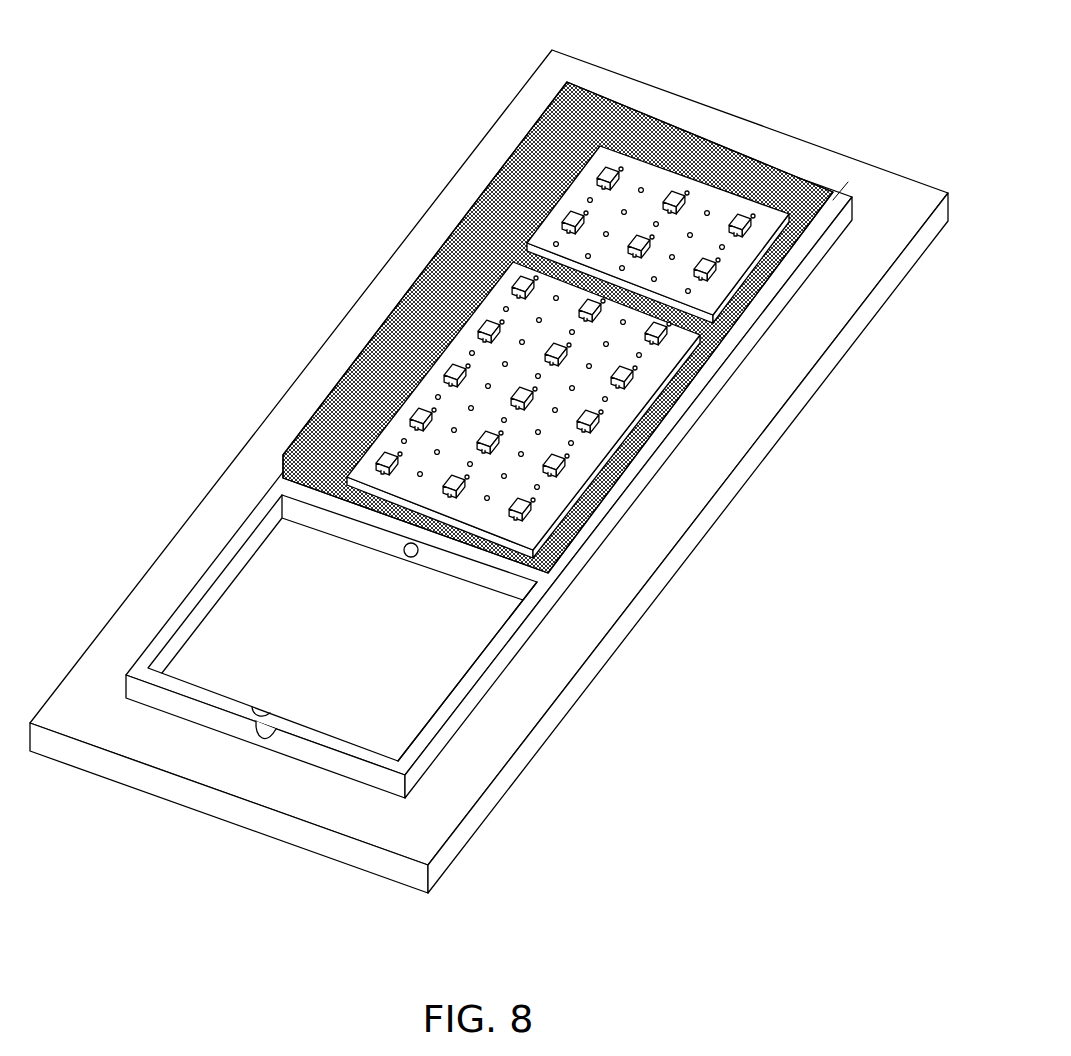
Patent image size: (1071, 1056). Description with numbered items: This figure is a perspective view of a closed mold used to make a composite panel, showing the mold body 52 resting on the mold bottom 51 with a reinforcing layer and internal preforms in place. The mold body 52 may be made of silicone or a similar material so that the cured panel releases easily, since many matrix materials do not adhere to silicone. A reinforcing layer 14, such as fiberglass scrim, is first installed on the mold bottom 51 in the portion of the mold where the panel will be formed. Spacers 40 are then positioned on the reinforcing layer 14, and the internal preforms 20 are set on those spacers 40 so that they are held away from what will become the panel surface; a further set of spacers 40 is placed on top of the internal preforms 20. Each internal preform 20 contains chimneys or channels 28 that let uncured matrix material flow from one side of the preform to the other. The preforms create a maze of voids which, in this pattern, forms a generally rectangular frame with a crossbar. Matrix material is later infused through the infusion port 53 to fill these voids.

The reinforcing layer 14 is at (414, 288).
The internal preform 20 is at (668, 183).
The channel 28 is at (720, 203).
The spacer 40 is at (610, 170).
The mold bottom 51 is at (670, 532).
The mold body 52 is at (710, 393).
The infusion port 53 is at (408, 557).